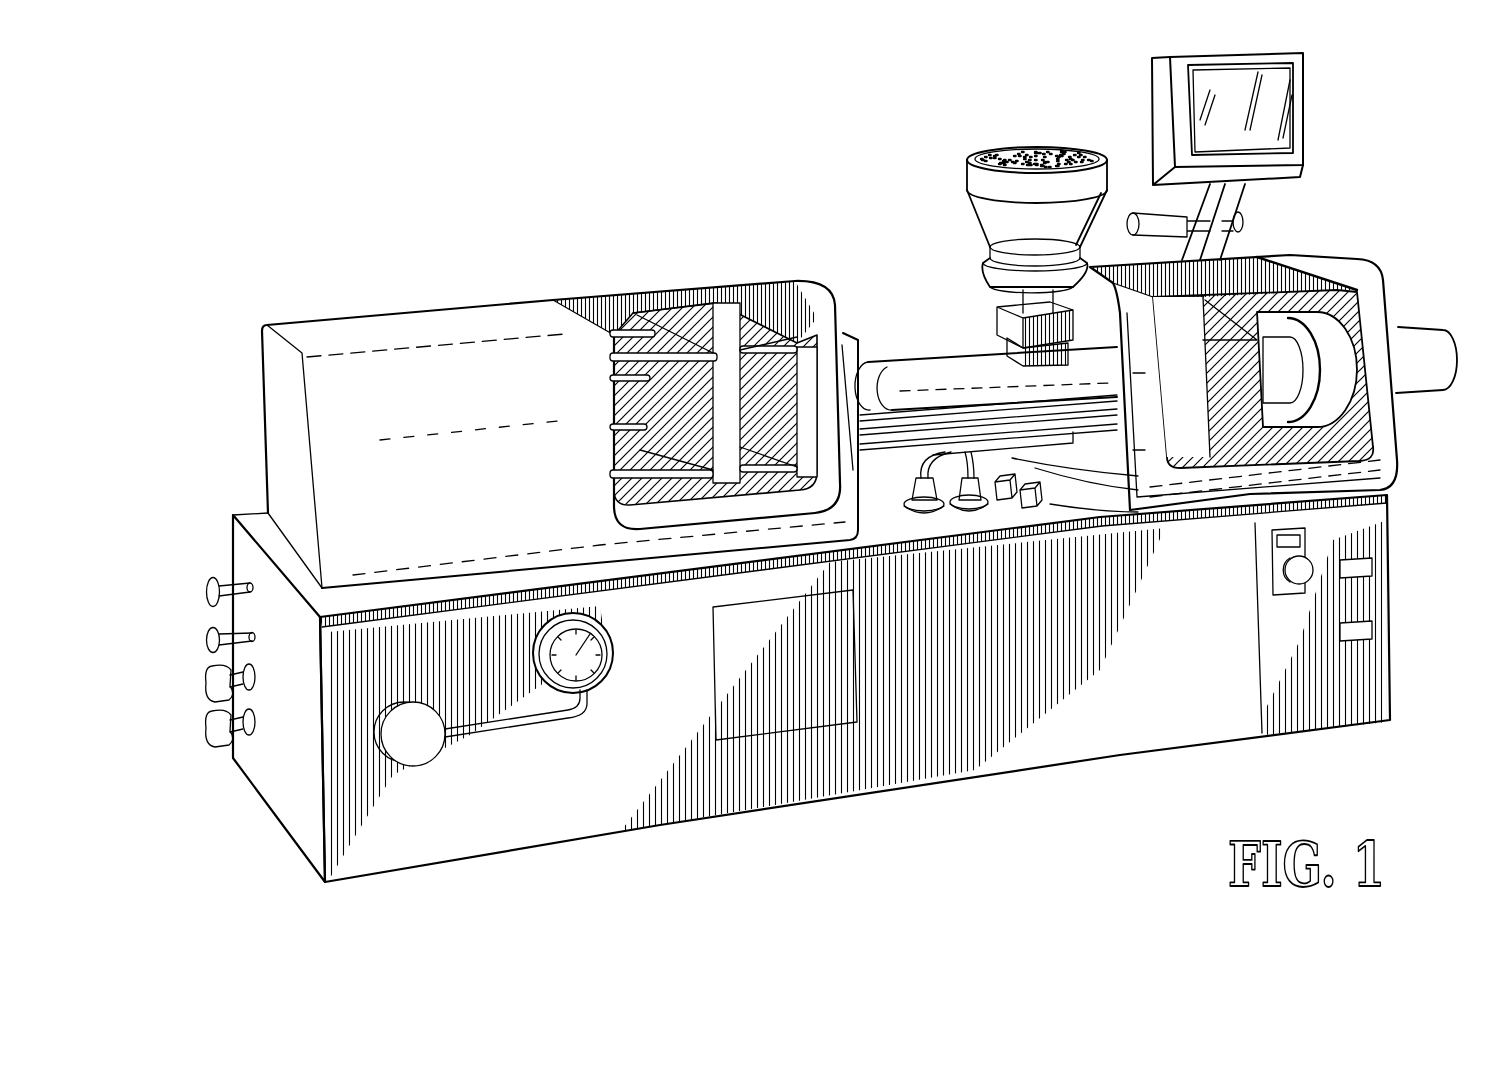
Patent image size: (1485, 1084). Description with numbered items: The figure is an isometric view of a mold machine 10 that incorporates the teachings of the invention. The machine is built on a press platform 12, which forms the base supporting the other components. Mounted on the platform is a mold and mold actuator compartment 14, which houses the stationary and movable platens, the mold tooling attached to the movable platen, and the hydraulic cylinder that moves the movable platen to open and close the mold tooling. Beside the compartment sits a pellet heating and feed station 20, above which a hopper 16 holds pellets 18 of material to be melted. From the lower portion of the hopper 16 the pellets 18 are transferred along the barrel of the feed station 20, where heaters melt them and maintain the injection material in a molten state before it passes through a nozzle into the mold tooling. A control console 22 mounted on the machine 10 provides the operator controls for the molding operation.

The mold machine 10 is at (796, 175).
The press platform 12 is at (537, 843).
The mold and mold actuator compartment 14 is at (639, 291).
The hopper 16 is at (1031, 140).
The pellets 18 is at (1053, 147).
The pellet heating and feed station 20 is at (916, 348).
The control console 22 is at (1305, 88).